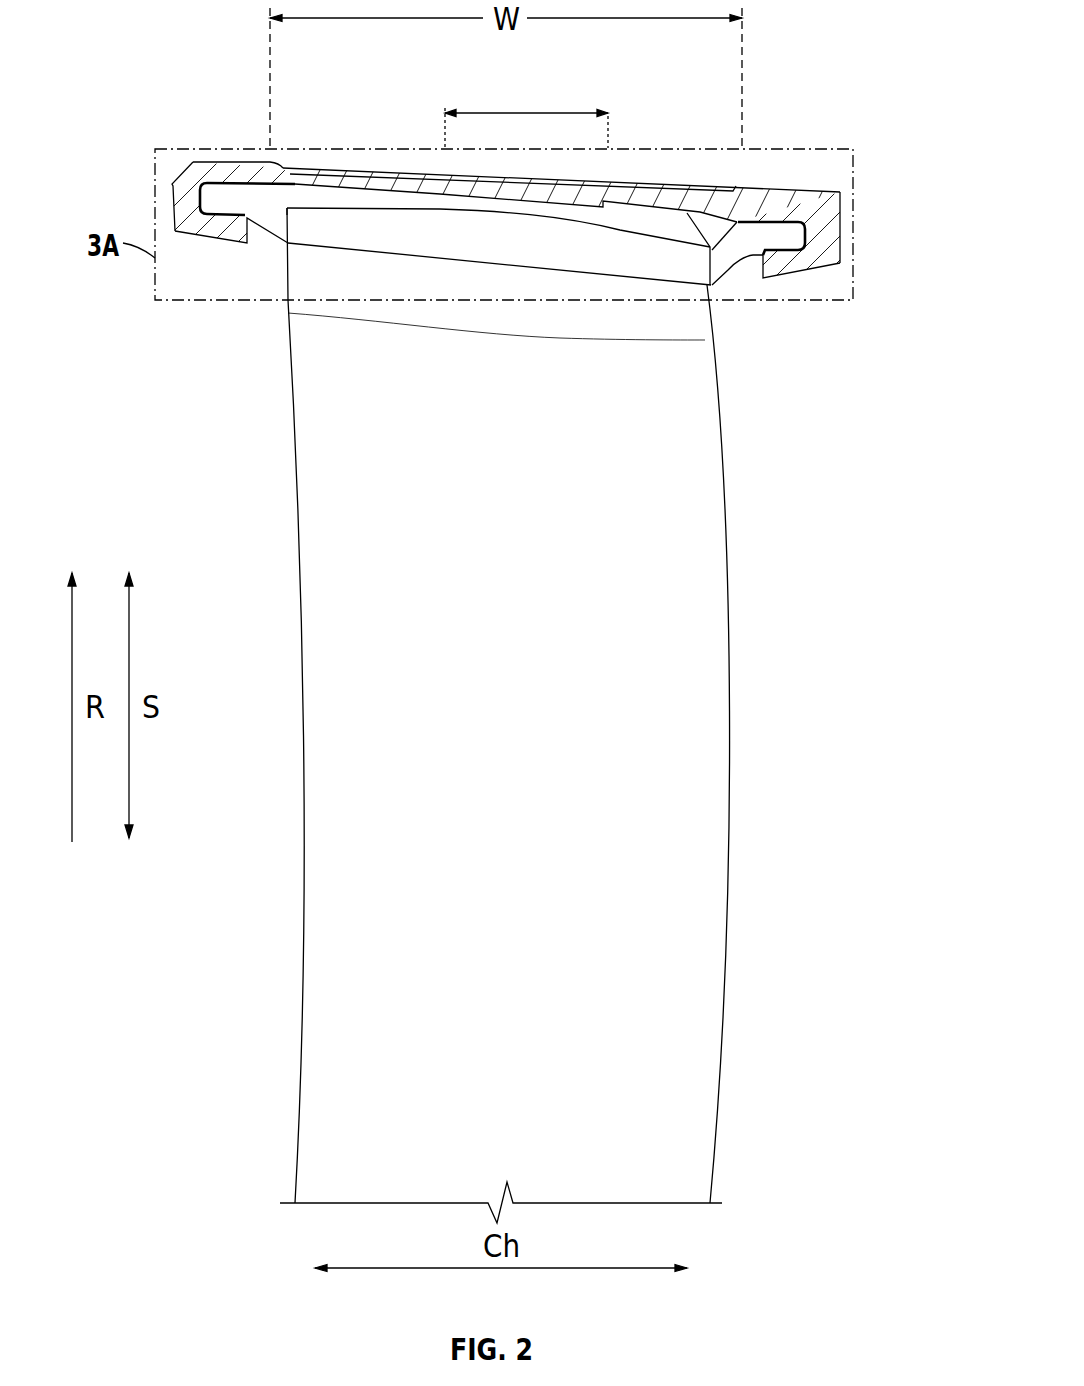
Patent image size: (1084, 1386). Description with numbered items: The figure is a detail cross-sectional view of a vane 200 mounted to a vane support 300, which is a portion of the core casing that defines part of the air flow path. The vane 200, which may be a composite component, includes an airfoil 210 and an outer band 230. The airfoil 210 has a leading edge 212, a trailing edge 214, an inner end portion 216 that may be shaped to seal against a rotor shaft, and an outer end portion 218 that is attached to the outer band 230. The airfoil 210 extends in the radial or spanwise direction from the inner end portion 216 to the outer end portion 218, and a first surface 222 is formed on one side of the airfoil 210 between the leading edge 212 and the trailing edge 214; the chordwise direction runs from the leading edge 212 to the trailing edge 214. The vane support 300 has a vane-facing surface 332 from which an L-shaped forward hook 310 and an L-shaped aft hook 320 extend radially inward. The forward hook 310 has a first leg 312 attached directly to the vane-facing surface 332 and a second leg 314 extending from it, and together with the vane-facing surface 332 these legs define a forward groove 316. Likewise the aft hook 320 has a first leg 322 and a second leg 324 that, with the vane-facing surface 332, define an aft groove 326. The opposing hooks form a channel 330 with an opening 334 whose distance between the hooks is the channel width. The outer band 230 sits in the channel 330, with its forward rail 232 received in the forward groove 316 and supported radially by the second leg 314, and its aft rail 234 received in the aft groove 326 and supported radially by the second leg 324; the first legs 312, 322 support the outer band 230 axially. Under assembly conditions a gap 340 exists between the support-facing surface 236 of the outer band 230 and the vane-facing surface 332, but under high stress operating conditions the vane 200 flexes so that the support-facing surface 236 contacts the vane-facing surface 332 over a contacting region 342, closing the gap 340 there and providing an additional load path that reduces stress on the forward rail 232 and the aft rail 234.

The vane 200 is at (555, 715).
The airfoil 210 is at (343, 813).
The leading edge 212 is at (298, 588).
The trailing edge 214 is at (732, 602).
The inner end portion 216 is at (740, 1190).
The outer end portion 218 is at (878, 300).
The first surface 222 is at (535, 714).
The outer band 230 is at (390, 233).
The forward rail 232 is at (242, 202).
The aft rail 234 is at (784, 232).
The support-facing surface 236 is at (630, 215).
The vane support 300 is at (500, 219).
The forward hook 310 is at (193, 223).
The first leg 312 is at (177, 197).
The second leg 314 is at (243, 243).
The forward groove 316 is at (221, 196).
The aft hook 320 is at (824, 216).
The first leg 322 is at (820, 230).
The second leg 324 is at (777, 267).
The aft groove 326 is at (820, 190).
The channel 330 is at (434, 240).
The vane-facing surface 332 is at (669, 222).
The opening 334 is at (479, 290).
The gap 340 is at (432, 188).
The contacting region 342 is at (535, 112).